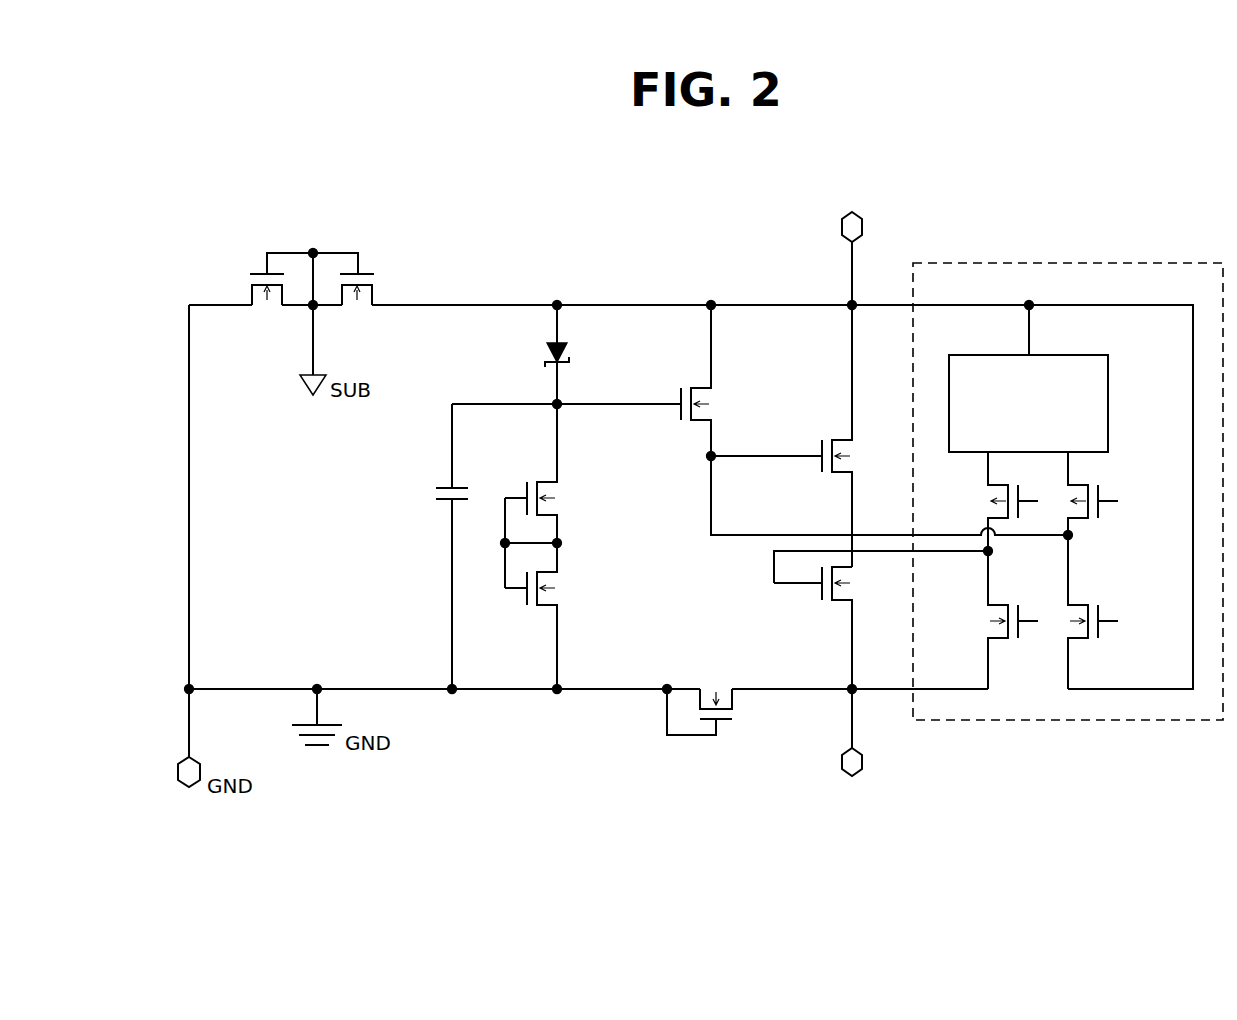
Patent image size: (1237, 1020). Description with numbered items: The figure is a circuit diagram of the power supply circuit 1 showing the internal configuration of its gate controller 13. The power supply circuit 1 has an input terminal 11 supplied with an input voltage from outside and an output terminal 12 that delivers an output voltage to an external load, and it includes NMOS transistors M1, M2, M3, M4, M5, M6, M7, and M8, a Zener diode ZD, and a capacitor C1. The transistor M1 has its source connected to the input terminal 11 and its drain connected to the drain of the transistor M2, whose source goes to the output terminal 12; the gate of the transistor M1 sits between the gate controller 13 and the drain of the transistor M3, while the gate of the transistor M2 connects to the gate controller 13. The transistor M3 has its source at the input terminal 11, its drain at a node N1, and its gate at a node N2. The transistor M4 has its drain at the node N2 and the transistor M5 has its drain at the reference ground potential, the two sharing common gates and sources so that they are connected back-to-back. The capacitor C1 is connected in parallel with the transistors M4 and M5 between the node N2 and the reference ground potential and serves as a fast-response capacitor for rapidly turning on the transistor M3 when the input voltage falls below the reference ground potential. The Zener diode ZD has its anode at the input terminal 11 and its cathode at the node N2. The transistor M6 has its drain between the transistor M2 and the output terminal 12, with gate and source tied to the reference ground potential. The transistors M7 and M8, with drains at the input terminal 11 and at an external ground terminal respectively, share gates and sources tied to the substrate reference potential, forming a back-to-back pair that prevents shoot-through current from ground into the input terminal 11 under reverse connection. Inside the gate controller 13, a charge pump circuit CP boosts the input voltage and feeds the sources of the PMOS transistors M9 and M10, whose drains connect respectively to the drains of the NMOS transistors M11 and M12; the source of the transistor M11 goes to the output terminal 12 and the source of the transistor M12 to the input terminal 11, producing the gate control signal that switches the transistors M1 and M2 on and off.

The power supply circuit 1 is at (625, 183).
The input terminal 11 is at (862, 228).
The output terminal 12 is at (862, 764).
The gate controller 13 is at (1071, 262).
The charge pump circuit CP is at (1108, 386).
The transistor M1 is at (800, 436).
The transistor M2 is at (881, 620).
The transistor M3 is at (874, 420).
The transistor M4 is at (550, 473).
The transistor M5 is at (550, 593).
The transistor M6 is at (700, 698).
The transistor M7 is at (357, 307).
The transistor M8 is at (304, 296).
The transistor M9 is at (1013, 501).
The transistor M10 is at (1093, 493).
The transistor M11 is at (1014, 620).
The transistor M12 is at (1093, 612).
The capacitor C1 is at (468, 546).
The Zener diode ZD is at (577, 354).
The node N1 is at (690, 457).
The node N2 is at (579, 418).